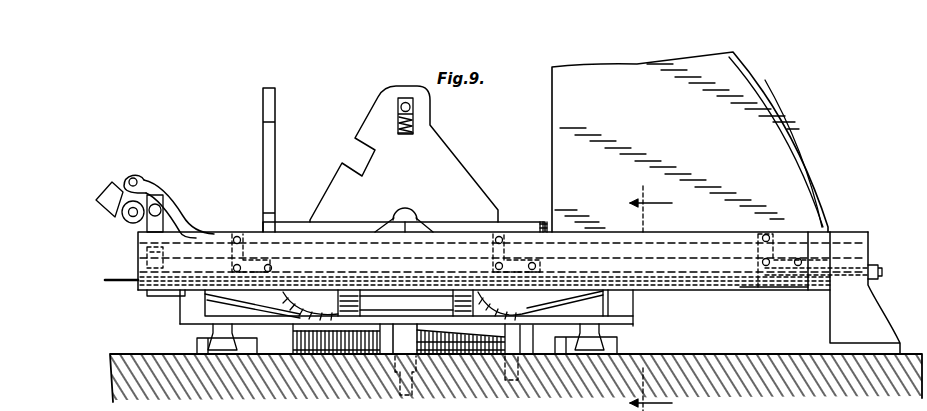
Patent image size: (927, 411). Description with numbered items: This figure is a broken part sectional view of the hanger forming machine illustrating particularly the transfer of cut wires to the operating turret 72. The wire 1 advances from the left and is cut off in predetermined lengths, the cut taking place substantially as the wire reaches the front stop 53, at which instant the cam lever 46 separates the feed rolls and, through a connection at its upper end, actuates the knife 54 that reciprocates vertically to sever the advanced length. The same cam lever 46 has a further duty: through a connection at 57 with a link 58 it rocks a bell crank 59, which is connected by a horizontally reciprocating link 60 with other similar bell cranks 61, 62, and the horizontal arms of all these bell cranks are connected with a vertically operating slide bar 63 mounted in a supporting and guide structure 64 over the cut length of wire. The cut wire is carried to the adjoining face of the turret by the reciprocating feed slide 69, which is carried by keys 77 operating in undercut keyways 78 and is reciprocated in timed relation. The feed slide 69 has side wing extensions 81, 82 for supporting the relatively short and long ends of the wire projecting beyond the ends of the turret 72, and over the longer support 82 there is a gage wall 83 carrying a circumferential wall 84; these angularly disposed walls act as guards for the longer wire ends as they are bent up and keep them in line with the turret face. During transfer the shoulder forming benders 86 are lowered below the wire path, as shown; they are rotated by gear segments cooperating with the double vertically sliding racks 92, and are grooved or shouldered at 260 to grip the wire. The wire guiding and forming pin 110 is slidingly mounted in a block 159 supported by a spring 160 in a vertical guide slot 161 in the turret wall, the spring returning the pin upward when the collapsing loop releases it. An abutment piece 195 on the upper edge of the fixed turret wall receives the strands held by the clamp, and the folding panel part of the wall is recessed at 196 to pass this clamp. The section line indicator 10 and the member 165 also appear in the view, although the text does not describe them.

The wire 1 is at (117, 284).
The section line indicator 10 is at (651, 298).
The cam lever 46 is at (110, 190).
The front stop 53 is at (838, 268).
The knife 54 is at (147, 258).
The connection 57 is at (133, 178).
The link 58 is at (172, 191).
The bell crank 59 is at (232, 258).
The horizontally reciprocating link 60 is at (708, 232).
The bell crank 61 is at (493, 254).
The bell crank 62 is at (771, 252).
The slide bar 63 is at (663, 262).
The supporting and guide structure 64 is at (784, 232).
The feed slide 69 is at (380, 322).
The turret 72 is at (534, 226).
The keys 77 is at (210, 332).
The undercut keyways 78 is at (205, 352).
The side wing extension 81 is at (168, 295).
The side wing extension 82 is at (697, 290).
The gage wall 83 is at (690, 142).
The circumferential wall 84 is at (816, 162).
The shoulder forming benders 86 is at (245, 302).
The double vertically sliding racks 92 is at (300, 345).
The wire guiding and forming pin 110 is at (398, 104).
The block 159 is at (413, 104).
The spring 160 is at (413, 125).
The vertical guide slot 161 is at (398, 126).
The support bracket 165 is at (263, 118).
The abutment piece 195 is at (399, 213).
The recess 196 is at (410, 204).
The groove or shoulder 260 is at (633, 297).